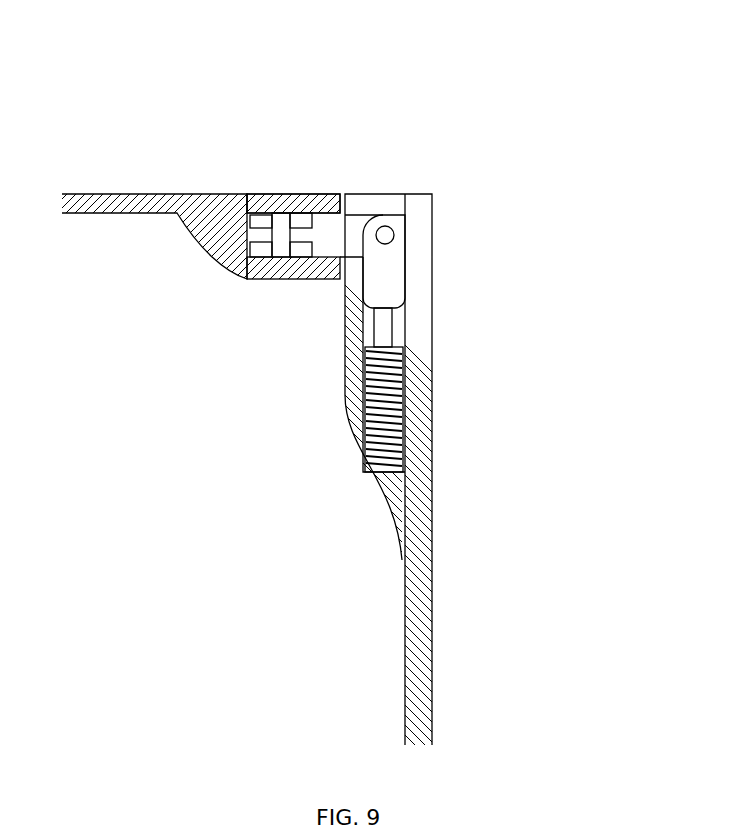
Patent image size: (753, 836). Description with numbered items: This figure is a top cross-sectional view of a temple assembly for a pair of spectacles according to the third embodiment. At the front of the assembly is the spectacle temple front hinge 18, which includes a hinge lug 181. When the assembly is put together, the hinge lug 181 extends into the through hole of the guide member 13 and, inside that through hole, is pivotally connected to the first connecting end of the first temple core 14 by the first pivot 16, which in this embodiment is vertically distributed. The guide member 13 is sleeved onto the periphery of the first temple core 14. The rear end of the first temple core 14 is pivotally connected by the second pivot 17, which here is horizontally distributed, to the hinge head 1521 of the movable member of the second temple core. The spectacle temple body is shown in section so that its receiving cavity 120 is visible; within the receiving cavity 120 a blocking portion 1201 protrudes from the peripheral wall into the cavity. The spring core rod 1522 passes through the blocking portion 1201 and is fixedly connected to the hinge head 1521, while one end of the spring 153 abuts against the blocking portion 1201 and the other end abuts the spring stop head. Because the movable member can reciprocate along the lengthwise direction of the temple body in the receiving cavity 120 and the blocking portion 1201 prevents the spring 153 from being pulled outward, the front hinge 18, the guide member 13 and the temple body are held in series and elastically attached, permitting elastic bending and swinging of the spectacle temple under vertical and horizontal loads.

The guide member 13 is at (287, 197).
The first temple core 14 is at (332, 198).
The first pivot 16 is at (257, 197).
The second pivot 17 is at (392, 231).
The spectacle temple front hinge 18 is at (178, 218).
The receiving cavity 120 is at (393, 205).
The hinge lug 181 is at (290, 274).
The spring 153 is at (366, 423).
The blocking portion 1201 is at (386, 340).
The hinge head 1521 is at (390, 272).
The spring core rod 1522 is at (383, 318).